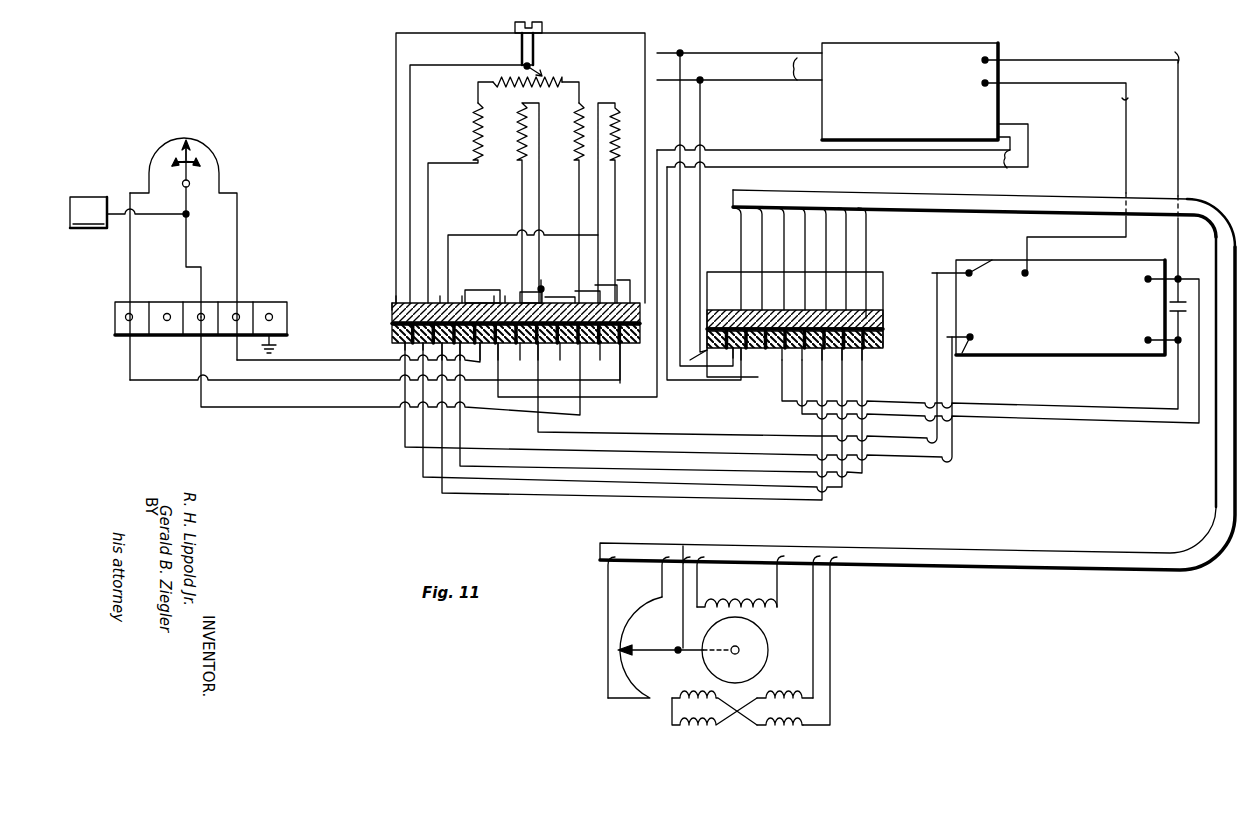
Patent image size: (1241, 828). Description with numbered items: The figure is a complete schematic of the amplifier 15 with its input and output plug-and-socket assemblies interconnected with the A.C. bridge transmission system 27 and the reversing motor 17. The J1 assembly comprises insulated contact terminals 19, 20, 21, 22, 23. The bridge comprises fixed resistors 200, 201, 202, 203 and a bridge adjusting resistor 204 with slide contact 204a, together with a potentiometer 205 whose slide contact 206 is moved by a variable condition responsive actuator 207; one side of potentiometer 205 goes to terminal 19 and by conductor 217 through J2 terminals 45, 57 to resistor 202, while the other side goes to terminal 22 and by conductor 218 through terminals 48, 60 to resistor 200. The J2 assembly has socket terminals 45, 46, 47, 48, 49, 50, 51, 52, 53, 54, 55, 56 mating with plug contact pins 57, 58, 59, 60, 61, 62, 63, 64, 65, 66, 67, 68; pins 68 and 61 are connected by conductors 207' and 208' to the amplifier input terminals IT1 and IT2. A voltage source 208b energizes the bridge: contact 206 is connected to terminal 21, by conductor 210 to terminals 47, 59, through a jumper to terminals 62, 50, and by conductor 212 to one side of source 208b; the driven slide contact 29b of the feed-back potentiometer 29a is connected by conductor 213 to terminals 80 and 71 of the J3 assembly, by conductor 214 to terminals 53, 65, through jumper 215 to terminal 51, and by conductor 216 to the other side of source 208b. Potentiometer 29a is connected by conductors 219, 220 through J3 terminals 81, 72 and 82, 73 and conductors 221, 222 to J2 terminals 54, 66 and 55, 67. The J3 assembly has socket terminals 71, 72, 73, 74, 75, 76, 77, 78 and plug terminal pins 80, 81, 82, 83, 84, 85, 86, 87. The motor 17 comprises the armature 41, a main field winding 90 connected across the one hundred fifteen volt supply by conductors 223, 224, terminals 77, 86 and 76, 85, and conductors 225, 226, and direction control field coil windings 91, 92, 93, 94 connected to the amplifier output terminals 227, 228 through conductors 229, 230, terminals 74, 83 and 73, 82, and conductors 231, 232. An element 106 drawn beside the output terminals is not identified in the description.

The J1 assembly J1 is at (107, 328).
The contact terminal 19 is at (118, 331).
The contact terminal 20 is at (175, 330).
The contact terminal 21 is at (215, 332).
The contact terminal 22 is at (249, 307).
The contact terminal 23 is at (280, 310).
The A.C. bridge transmission system 27 is at (254, 168).
The potentiometer 205 is at (201, 146).
The slide contact 206 is at (184, 150).
The variable condition responsive actuator 207 is at (129, 186).
The conductor 210 is at (265, 411).
The conductor 217 is at (185, 382).
The conductor 218 is at (330, 358).
The J2 assembly J2 is at (518, 175).
The fixed resistor 200 is at (518, 130).
The fixed resistor 201 is at (627, 100).
The fixed resistor 202 is at (576, 124).
The fixed resistor 203 is at (476, 116).
The bridge adjusting resistor 204 is at (548, 79).
The slide contact 204a is at (533, 66).
The jumper 215 is at (482, 286).
The contact pin 57 is at (640, 290).
The contact pin 58 is at (625, 290).
The contact pin 59 is at (600, 292).
The contact pin 60 is at (572, 297).
The contact pin 61 is at (543, 280).
The contact pin 62 is at (526, 292).
The contact pin 63 is at (505, 296).
The contact pin 64 is at (494, 296).
The contact pin 65 is at (462, 296).
The contact pin 66 is at (440, 296).
The contact pin 67 is at (398, 298).
The contact pin 68 is at (392, 305).
The socket terminal 56 is at (392, 330).
The socket terminal 55 is at (403, 346).
The socket terminal 54 is at (420, 352).
The socket terminal 53 is at (452, 352).
The socket terminal 52 is at (487, 345).
The socket terminal 51 is at (495, 350).
The socket terminal 50 is at (500, 350).
The socket terminal 49 is at (530, 348).
The socket terminal 48 is at (548, 350).
The socket terminal 47 is at (568, 350).
The socket terminal 46 is at (620, 380).
The socket terminal 45 is at (612, 350).
The conductor 208' is at (772, 358).
The conductor 207' is at (705, 400).
The conductor 214 is at (864, 470).
The conductor 221 is at (458, 495).
The conductor 222 is at (421, 461).
The conductor 212 is at (772, 150).
The conductor 216 is at (757, 168).
The conductor 223 is at (703, 106).
The conductor 224 is at (683, 124).
The voltage source 208b is at (1032, 151).
The conductor 231 is at (773, 212).
The conductor 232 is at (805, 212).
The J3 assembly J3 is at (795, 312).
The terminal pin 80 is at (868, 316).
The terminal pin 81 is at (862, 308).
The terminal pin 82 is at (842, 308).
The terminal pin 83 is at (820, 308).
The terminal pin 84 is at (800, 308).
The terminal pin 85 is at (778, 308).
The terminal pin 86 is at (756, 308).
The terminal pin 87 is at (724, 308).
The socket terminal 71 is at (872, 352).
The socket terminal 72 is at (842, 352).
The socket terminal 73 is at (822, 354).
The socket terminal 74 is at (803, 352).
The socket terminal 75 is at (782, 356).
The socket terminal 76 is at (744, 350).
The socket terminal 77 is at (733, 372).
The socket terminal 78 is at (700, 356).
The conductor 213 is at (868, 224).
The conductor 219 is at (848, 241).
The conductor 220 is at (828, 256).
The conductor 225 is at (741, 231).
The conductor 226 is at (750, 220).
The conductor 229 is at (1176, 393).
The conductor 230 is at (1195, 426).
The amplifier 15 is at (1065, 342).
The amplifier input terminal IT1 is at (1000, 249).
The amplifier input terminal IT2 is at (962, 355).
The amplifier output terminal 227 is at (1146, 279).
The amplifier output terminal 228 is at (1146, 339).
The capacitor 106 is at (1183, 300).
The reversing motor 17 is at (798, 666).
The armature 41 is at (768, 641).
The feed-back potentiometer 29a is at (628, 637).
The slide contact 29b is at (660, 659).
The main field winding 90 is at (760, 598).
The direction control field coil winding 91 is at (795, 696).
The direction control field coil winding 92 is at (710, 735).
The direction control field coil winding 93 is at (798, 735).
The direction control field coil winding 94 is at (696, 696).